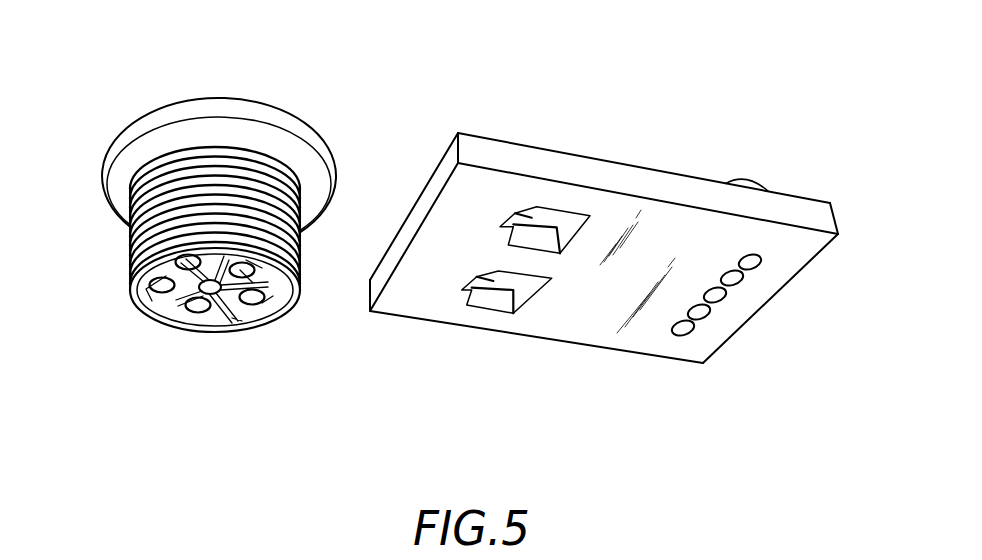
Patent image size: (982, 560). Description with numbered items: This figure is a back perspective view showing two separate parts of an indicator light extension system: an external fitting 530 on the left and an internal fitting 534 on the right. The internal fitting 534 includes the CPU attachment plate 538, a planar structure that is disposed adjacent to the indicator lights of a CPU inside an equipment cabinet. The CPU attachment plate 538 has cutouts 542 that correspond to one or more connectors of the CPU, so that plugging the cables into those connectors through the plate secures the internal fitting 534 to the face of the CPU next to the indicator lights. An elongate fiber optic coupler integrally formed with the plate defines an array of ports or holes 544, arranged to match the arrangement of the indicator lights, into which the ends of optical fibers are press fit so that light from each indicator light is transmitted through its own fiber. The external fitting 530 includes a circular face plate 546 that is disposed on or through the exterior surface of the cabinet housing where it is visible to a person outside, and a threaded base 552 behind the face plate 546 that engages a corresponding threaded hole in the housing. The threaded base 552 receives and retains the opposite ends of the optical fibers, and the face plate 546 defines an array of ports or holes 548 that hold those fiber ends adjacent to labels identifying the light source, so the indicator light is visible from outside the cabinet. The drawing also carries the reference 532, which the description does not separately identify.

The external fitting 530 is at (101, 262).
The circuit board assembly 532 is at (313, 391).
The internal fitting 534 is at (563, 322).
The CPU attachment plate 538 is at (633, 350).
The cutouts 542 is at (488, 312).
The ports or holes 544 is at (754, 275).
The face plate 546 is at (192, 110).
The ports or holes 548 is at (195, 318).
The threaded base 552 is at (140, 312).